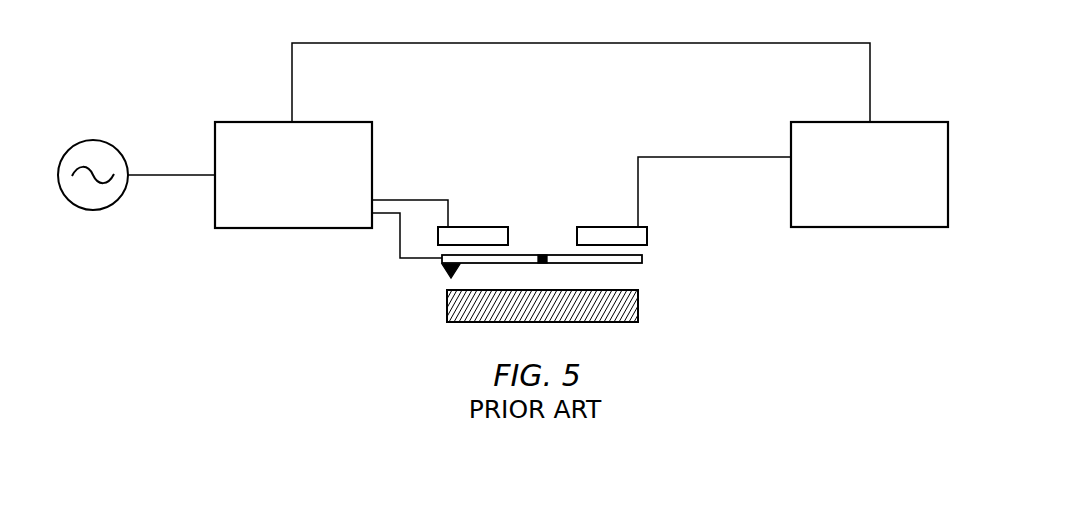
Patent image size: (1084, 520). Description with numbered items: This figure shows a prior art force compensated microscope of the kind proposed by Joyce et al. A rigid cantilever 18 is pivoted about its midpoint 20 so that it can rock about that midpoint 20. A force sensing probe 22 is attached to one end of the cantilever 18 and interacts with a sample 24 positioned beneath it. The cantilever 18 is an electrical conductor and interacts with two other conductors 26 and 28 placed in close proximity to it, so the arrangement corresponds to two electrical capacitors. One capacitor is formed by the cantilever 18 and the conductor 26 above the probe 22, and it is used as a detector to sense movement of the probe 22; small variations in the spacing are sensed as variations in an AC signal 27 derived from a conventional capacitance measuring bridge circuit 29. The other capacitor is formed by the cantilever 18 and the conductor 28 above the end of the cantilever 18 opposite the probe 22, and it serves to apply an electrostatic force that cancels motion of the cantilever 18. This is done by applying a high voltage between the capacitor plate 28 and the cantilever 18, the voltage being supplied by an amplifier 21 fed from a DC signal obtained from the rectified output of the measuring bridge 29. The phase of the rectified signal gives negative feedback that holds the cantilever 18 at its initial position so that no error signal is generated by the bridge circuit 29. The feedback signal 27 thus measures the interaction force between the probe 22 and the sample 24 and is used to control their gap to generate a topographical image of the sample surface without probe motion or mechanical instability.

The rigid cantilever 18 is at (643, 260).
The midpoint 20 is at (542, 253).
The amplifier 21 is at (853, 191).
The force sensing probe 22 is at (445, 267).
The sample 24 is at (640, 303).
The conductor 26 is at (478, 225).
The AC signal 27 is at (92, 142).
The conductor (capacitor plate) 28 is at (620, 225).
The capacitance measuring bridge circuit 29 is at (277, 191).